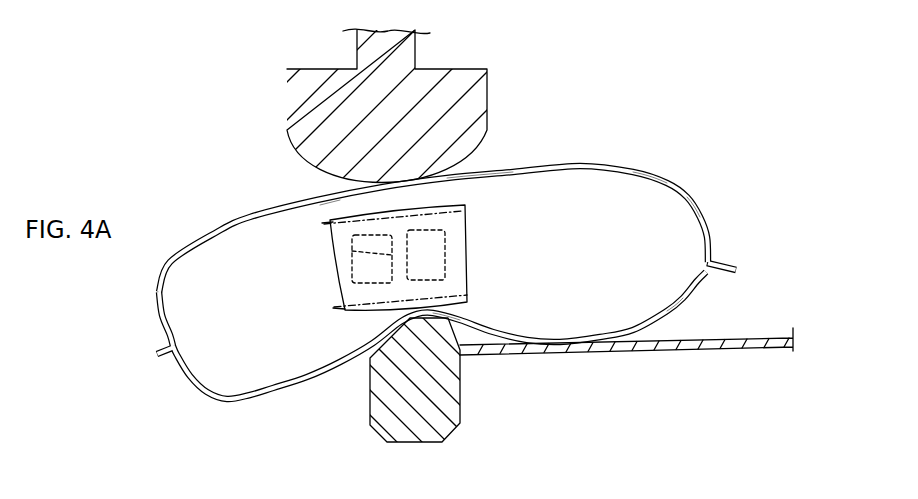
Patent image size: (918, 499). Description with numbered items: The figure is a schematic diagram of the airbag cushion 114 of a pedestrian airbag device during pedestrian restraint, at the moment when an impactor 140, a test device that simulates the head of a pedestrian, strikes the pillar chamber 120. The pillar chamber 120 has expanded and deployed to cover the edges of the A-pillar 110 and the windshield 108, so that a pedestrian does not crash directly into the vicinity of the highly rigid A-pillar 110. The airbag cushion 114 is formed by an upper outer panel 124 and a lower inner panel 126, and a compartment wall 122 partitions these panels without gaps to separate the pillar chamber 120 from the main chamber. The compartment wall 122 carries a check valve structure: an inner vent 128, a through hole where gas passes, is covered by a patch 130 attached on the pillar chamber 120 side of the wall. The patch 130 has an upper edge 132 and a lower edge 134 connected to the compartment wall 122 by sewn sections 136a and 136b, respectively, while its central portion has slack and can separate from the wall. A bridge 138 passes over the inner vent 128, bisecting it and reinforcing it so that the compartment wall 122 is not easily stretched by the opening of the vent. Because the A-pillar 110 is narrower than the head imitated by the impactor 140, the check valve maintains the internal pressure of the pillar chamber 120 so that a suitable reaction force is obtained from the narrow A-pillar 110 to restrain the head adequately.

The windshield 108 is at (740, 343).
The A-pillar 110 is at (370, 407).
The airbag cushion 114 is at (194, 189).
The pillar chamber 120 is at (587, 166).
The compartment wall 122 is at (632, 193).
The outer panel 124 is at (698, 200).
The inner panel 126 is at (686, 303).
The inner vent 128 is at (437, 252).
The patch 130 is at (463, 223).
The upper edge 132 is at (463, 187).
The lower edge 134 is at (471, 309).
The sewn section 136a is at (467, 210).
The sewn section 136b is at (468, 295).
The bridge 138 is at (350, 252).
The impactor 140 is at (487, 85).